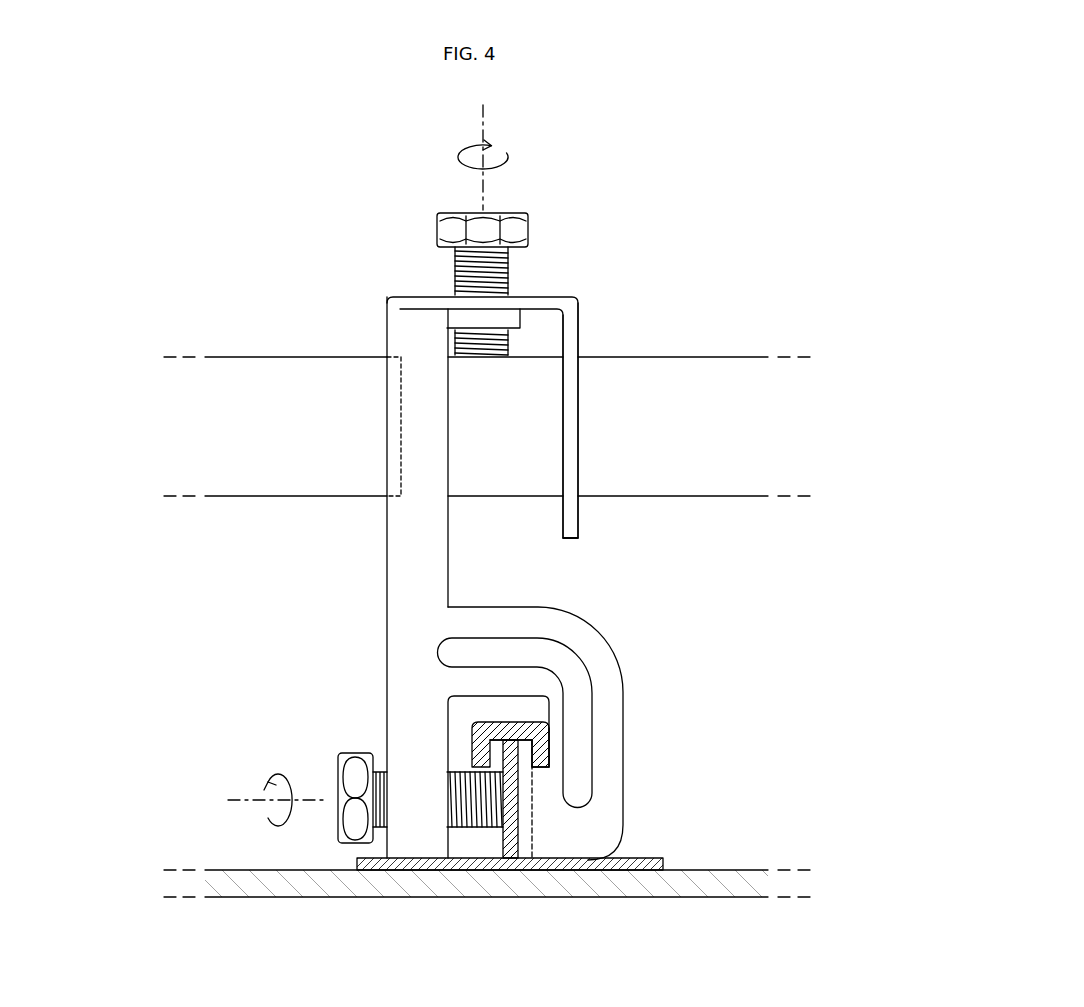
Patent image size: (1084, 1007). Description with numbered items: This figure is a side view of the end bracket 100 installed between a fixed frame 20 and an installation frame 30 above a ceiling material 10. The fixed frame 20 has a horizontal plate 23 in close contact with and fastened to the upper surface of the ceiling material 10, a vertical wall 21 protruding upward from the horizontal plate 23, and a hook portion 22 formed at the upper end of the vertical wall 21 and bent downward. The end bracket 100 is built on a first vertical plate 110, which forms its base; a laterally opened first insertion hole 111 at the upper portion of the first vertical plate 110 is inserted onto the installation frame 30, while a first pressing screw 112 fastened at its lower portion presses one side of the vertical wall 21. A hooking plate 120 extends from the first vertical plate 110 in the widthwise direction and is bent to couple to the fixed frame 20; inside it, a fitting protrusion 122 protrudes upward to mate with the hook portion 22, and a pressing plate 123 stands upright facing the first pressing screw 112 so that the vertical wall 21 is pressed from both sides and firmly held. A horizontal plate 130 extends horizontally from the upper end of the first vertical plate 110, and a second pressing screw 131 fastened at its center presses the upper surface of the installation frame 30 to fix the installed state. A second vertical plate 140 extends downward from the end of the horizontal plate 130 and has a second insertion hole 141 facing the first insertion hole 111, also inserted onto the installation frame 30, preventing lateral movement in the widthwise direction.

The ceiling material 10 is at (686, 888).
The fixed frame 20 is at (522, 677).
The vertical wall 21 is at (524, 850).
The hook portion 22 is at (538, 762).
The horizontal plate 23 is at (400, 865).
The installation frame 30 is at (296, 357).
The end bracket 100 is at (451, 575).
The first vertical plate 110 is at (408, 548).
The first insertion hole 111 is at (388, 335).
The first pressing screw 112 is at (340, 815).
The hooking plate 120 is at (607, 677).
The fitting protrusion 122 is at (527, 738).
The pressing plate 123 is at (525, 835).
The horizontal plate 130 is at (545, 387).
The second pressing screw 131 is at (528, 230).
The second vertical plate 140 is at (633, 438).
The second insertion hole 141 is at (577, 497).